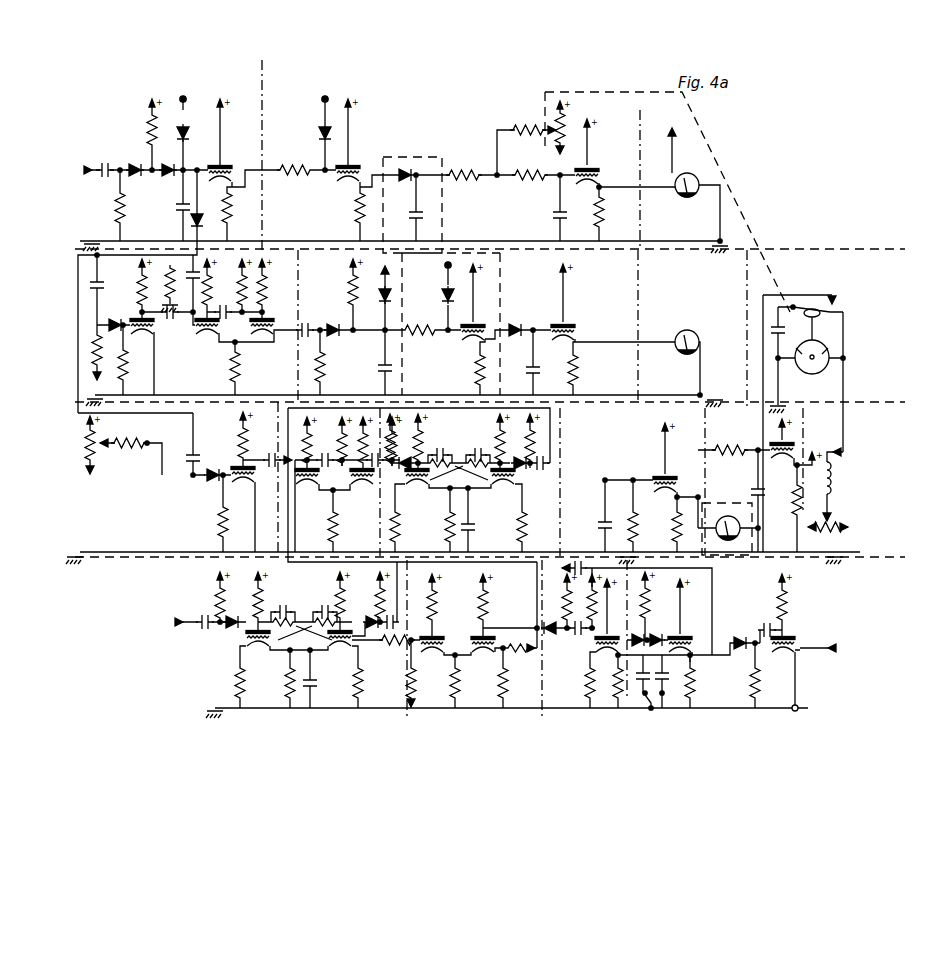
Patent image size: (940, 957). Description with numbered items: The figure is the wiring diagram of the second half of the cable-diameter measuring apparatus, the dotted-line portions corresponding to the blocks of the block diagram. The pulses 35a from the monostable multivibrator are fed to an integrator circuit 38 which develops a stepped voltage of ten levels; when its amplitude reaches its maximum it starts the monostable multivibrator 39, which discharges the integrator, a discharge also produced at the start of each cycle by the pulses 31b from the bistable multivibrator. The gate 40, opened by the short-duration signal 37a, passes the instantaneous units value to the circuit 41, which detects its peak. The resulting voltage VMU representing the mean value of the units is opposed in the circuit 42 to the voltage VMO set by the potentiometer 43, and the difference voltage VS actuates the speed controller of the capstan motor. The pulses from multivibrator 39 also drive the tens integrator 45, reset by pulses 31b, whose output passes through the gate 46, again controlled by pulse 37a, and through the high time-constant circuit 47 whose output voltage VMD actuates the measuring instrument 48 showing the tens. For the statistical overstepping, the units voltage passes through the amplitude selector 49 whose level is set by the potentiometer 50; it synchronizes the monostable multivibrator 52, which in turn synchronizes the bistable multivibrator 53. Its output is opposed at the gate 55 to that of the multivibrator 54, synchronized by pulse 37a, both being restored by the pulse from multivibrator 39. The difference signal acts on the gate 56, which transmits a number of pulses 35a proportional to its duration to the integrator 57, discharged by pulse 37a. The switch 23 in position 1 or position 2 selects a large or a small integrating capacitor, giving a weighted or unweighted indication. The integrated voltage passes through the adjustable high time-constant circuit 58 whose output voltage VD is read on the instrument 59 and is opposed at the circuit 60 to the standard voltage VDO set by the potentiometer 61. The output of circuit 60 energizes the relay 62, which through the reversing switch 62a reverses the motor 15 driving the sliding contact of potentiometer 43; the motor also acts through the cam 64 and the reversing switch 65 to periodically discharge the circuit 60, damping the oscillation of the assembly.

The switch position 1 is at (640, 681).
The switch position 2 is at (665, 681).
The motor 15 is at (812, 374).
The switch 23 is at (634, 704).
The pulses from the bistable multivibrator 31b is at (190, 103).
The pulses from the monostable multivibrator 35a is at (580, 561).
The short-duration signal of the monostable multivibrator 37a is at (330, 103).
The integrator circuit 38 is at (179, 253).
The monostable multivibrator 39 is at (179, 324).
The gate 40 is at (336, 169).
The peak detection circuit 41 is at (420, 205).
The opposition circuit 42 is at (510, 188).
The potentiometer 43 is at (534, 137).
The integrator 45 is at (338, 326).
The gate 46 is at (442, 329).
The high time-constant circuit 47 is at (590, 329).
The measuring instrument 48 is at (677, 293).
The amplitude selector circuit 49 is at (239, 481).
The potentiometer 50 is at (135, 446).
The monostable multivibrator 52 is at (419, 485).
The bistable multivibrator 53 is at (467, 482).
The multivibrator 54 is at (301, 637).
The gate 55 is at (479, 635).
The gate 56 is at (615, 640).
The integrator 57 is at (713, 641).
The adjustable high time-constant circuit 58 is at (648, 487).
The measuring instrument 59 is at (727, 517).
The opposition circuit 60 is at (750, 485).
The potentiometer 61 is at (823, 524).
The relay 62 is at (843, 478).
The reversing switch 62a is at (836, 456).
The cam 64 is at (845, 323).
The reversing switch 65 is at (803, 296).
The standard mean diameter voltage VMO is at (540, 107).
The resulting voltage VS is at (663, 146).
The units mean voltage VMU is at (640, 185).
The tens output voltage VMD is at (672, 363).
The statistical overstepping voltage VD is at (716, 551).
The standard statistical overstepping voltage VDO is at (868, 519).